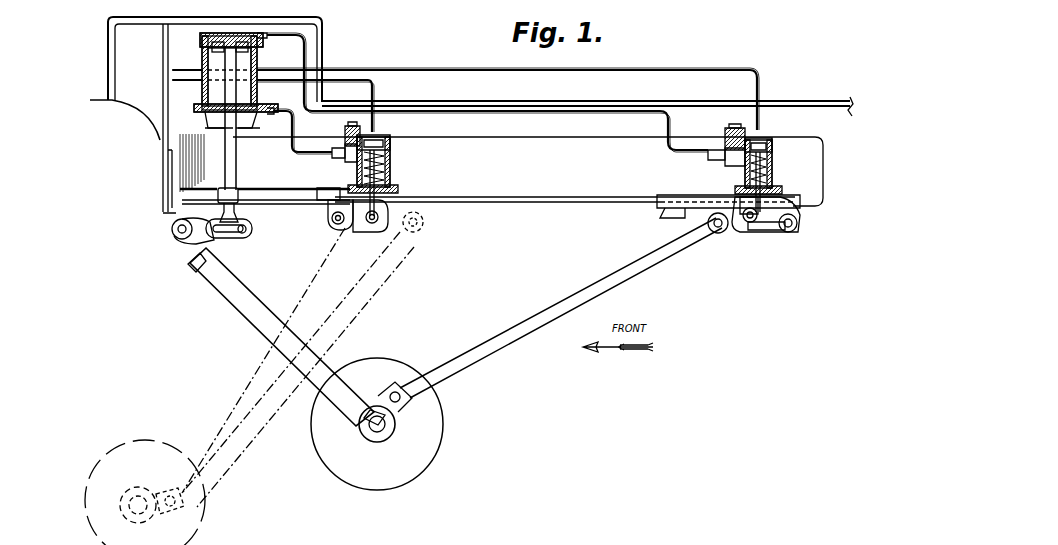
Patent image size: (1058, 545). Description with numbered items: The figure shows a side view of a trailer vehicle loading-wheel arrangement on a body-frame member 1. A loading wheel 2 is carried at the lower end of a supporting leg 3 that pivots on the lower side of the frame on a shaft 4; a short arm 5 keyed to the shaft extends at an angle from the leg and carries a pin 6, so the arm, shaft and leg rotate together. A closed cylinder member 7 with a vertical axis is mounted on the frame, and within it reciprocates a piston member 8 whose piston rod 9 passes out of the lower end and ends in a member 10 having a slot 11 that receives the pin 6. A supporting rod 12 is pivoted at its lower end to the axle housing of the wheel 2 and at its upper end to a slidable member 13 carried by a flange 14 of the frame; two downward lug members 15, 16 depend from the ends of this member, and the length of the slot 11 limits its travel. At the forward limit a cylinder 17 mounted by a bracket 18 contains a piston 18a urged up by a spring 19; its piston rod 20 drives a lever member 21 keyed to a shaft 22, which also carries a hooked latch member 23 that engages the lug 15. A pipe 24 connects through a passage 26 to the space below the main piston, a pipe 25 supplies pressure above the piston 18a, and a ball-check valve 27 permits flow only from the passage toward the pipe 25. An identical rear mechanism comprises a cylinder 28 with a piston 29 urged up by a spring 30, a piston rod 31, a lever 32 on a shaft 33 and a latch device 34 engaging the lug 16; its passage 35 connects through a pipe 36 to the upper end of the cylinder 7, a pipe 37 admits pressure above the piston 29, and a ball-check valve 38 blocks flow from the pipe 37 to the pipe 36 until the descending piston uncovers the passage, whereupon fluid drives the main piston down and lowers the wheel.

The body-frame member 1 is at (148, 106).
The loading wheel 2 is at (428, 434).
The supporting leg 3 is at (262, 325).
The shaft 4 is at (172, 229).
The short arm 5 is at (176, 240).
The pin 6 is at (247, 229).
The closed cylinder member 7 is at (210, 52).
The piston member 8 is at (254, 54).
The piston rod 9 is at (236, 158).
The slotted member 10 is at (240, 222).
The slot 11 is at (246, 238).
The supporting rod 12 is at (590, 296).
The slidable member 13 is at (668, 200).
The flange 14 is at (500, 199).
The lug member 15 is at (680, 214).
The lug member 16 is at (796, 218).
The cylinder 17 is at (388, 179).
The bracket 18 is at (348, 192).
The piston 18a is at (382, 156).
The spring 19 is at (387, 166).
The piston rod 20 is at (362, 197).
The lever member 21 is at (362, 218).
The shaft 22 is at (345, 216).
The latch member 23 is at (380, 224).
The pipe 24 is at (292, 152).
The pipe 25 is at (372, 89).
The passage 26 is at (342, 156).
The ball-check valve 27 is at (348, 138).
The cylinder 28 is at (772, 184).
The piston 29 is at (770, 154).
The spring 30 is at (768, 166).
The piston rod 31 is at (748, 172).
The lever 32 is at (768, 232).
The shaft 33 is at (787, 232).
The latch device 34 is at (750, 226).
The passage 35 is at (724, 157).
The pipe 36 is at (508, 112).
The pipe 37 is at (752, 78).
The ball-check valve 38 is at (724, 140).